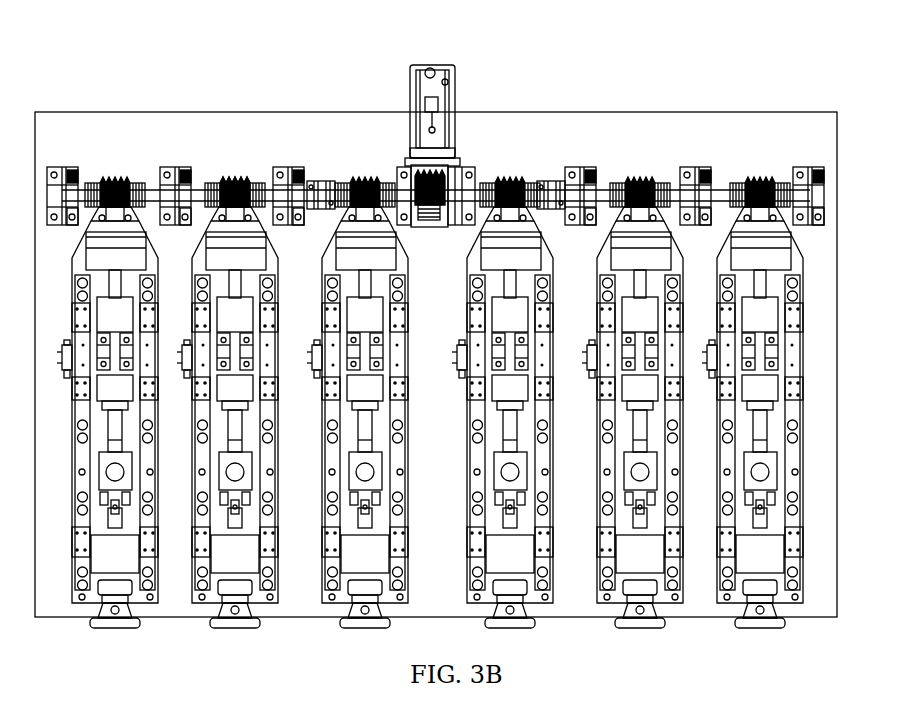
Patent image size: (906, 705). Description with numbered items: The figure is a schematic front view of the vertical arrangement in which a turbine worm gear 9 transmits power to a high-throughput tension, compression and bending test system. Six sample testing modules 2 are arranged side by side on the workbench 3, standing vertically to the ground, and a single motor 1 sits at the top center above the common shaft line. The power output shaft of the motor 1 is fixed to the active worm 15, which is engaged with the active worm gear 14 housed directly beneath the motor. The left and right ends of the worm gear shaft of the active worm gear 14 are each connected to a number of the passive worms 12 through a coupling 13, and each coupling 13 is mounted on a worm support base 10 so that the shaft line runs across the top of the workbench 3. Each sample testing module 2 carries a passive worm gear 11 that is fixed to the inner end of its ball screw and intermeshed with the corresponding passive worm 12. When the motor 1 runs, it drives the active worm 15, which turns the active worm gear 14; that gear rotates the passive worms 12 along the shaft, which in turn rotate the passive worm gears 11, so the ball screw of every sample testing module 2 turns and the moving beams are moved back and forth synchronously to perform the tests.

The motor 1 is at (485, 79).
The sample testing module 2 is at (536, 314).
The workbench 3 is at (436, 308).
The turbine worm gear 9 is at (686, 103).
The worm support base 10 is at (766, 112).
The passive worm gear 11 is at (147, 103).
The passive worm 12 is at (178, 103).
The coupling 13 is at (242, 112).
The active worm gear 14 is at (365, 113).
The active worm 15 is at (387, 110).